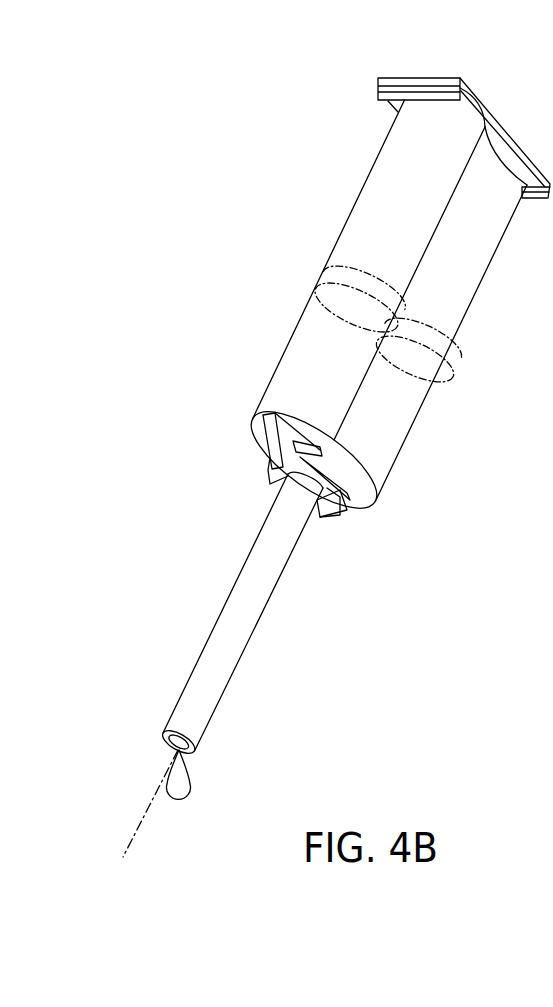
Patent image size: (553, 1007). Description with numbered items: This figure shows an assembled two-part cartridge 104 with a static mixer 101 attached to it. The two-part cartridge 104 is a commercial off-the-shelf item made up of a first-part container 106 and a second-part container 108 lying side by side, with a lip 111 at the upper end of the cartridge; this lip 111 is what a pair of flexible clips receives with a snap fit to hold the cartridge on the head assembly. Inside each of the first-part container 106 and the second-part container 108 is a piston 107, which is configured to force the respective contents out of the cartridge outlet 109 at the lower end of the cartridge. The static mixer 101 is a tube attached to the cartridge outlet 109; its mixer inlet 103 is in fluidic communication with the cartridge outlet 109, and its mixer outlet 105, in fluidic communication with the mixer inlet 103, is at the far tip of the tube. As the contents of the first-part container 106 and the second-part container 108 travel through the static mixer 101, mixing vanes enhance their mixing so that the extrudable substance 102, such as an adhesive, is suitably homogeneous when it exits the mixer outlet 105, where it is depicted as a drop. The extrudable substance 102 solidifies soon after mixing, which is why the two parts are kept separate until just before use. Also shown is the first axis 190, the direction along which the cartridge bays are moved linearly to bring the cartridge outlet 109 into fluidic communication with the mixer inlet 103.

The static mixer 101 is at (218, 622).
The extrudable substance 102 is at (191, 781).
The mixer inlet 103 is at (325, 521).
The two-part cartridge 104 is at (280, 358).
The mixer outlet 105 is at (157, 749).
The first-part container 106 is at (366, 178).
The piston 107 is at (320, 273).
The second-part container 108 is at (408, 438).
The cartridge outlet 109 is at (262, 471).
The lip 111 is at (481, 102).
The first axis 190 is at (128, 845).